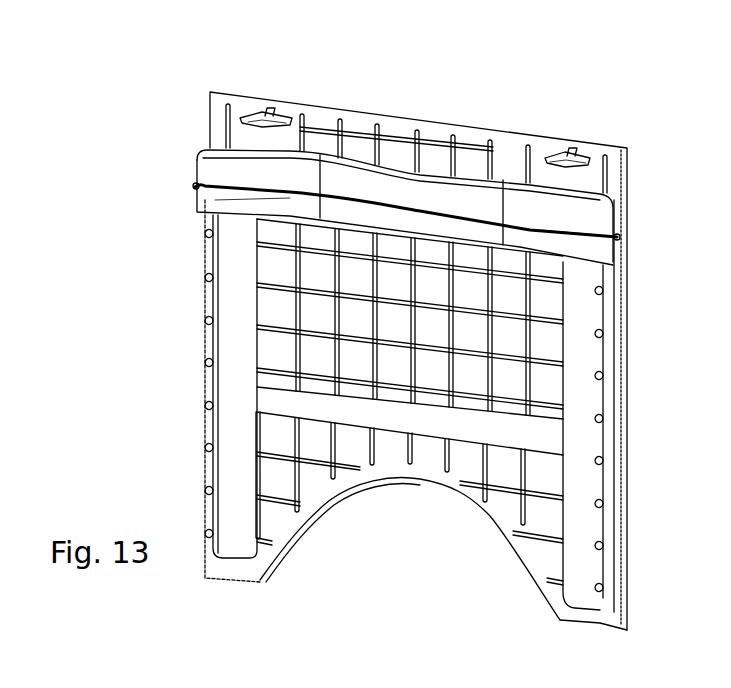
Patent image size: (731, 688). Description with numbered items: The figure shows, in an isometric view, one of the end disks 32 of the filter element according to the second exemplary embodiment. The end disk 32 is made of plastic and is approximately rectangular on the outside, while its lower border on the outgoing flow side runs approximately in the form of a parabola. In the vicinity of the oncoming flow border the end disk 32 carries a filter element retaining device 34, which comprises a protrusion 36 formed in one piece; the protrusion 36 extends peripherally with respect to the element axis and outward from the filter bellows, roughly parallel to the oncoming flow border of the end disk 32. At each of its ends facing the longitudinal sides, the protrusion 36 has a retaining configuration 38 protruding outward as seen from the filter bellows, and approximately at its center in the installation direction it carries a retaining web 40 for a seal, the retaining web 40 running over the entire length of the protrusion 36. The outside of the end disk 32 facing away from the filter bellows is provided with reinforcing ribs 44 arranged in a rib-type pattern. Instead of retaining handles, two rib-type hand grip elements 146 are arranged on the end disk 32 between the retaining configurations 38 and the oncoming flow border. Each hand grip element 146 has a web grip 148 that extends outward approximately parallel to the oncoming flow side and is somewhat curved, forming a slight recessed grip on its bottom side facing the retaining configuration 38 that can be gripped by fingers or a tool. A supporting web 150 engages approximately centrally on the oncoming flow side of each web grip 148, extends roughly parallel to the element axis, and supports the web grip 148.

The end disk 32 is at (123, 72).
The filter element retaining device 34 is at (198, 157).
The protrusion 36 is at (492, 232).
The retaining configuration 38 is at (222, 205).
The retaining web 40 is at (620, 240).
The reinforcing ribs 44 is at (483, 483).
The hand grip element 146 is at (284, 112).
The web grip 148 is at (250, 117).
The supporting web 150 is at (262, 108).